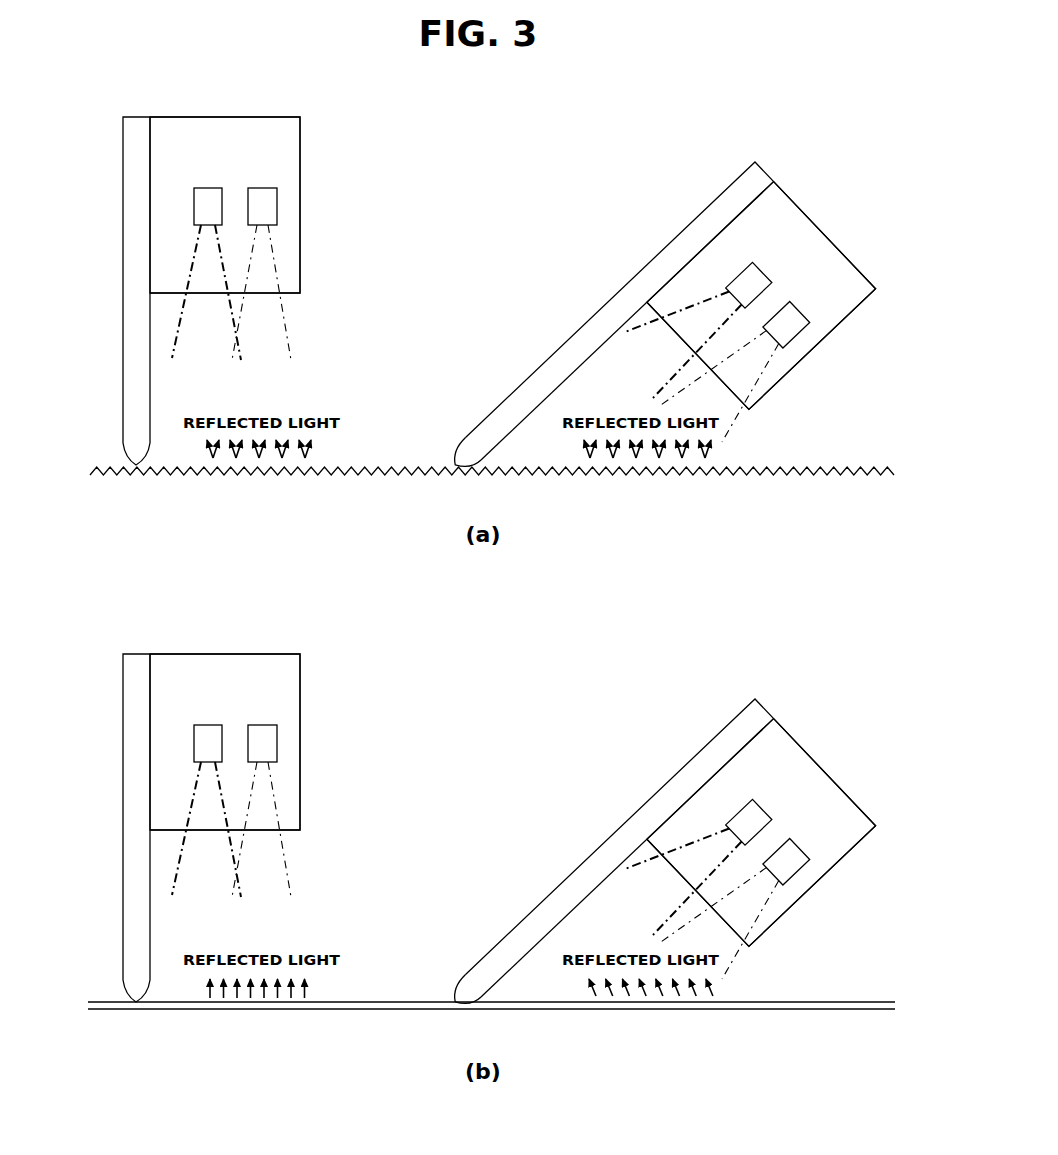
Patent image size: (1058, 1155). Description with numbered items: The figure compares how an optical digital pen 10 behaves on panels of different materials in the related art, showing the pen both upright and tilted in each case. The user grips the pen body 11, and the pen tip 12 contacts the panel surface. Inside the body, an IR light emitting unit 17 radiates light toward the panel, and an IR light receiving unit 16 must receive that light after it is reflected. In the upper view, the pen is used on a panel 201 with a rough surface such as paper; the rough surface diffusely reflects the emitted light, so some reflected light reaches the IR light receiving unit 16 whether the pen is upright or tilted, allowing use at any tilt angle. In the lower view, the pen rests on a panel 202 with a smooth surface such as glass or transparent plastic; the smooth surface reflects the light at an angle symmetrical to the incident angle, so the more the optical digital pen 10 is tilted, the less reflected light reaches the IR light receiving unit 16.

The optical digital pen 10 is at (117, 184).
The pen body 11 is at (300, 198).
The pen tip 12 is at (128, 452).
The IR light receiving unit 16 is at (483, 516).
The IR light emitting unit 17 is at (529, 536).
The panel made of a material having a rough surface 201 is at (798, 480).
The panel made of a material having a smooth surface 202 is at (796, 1013).